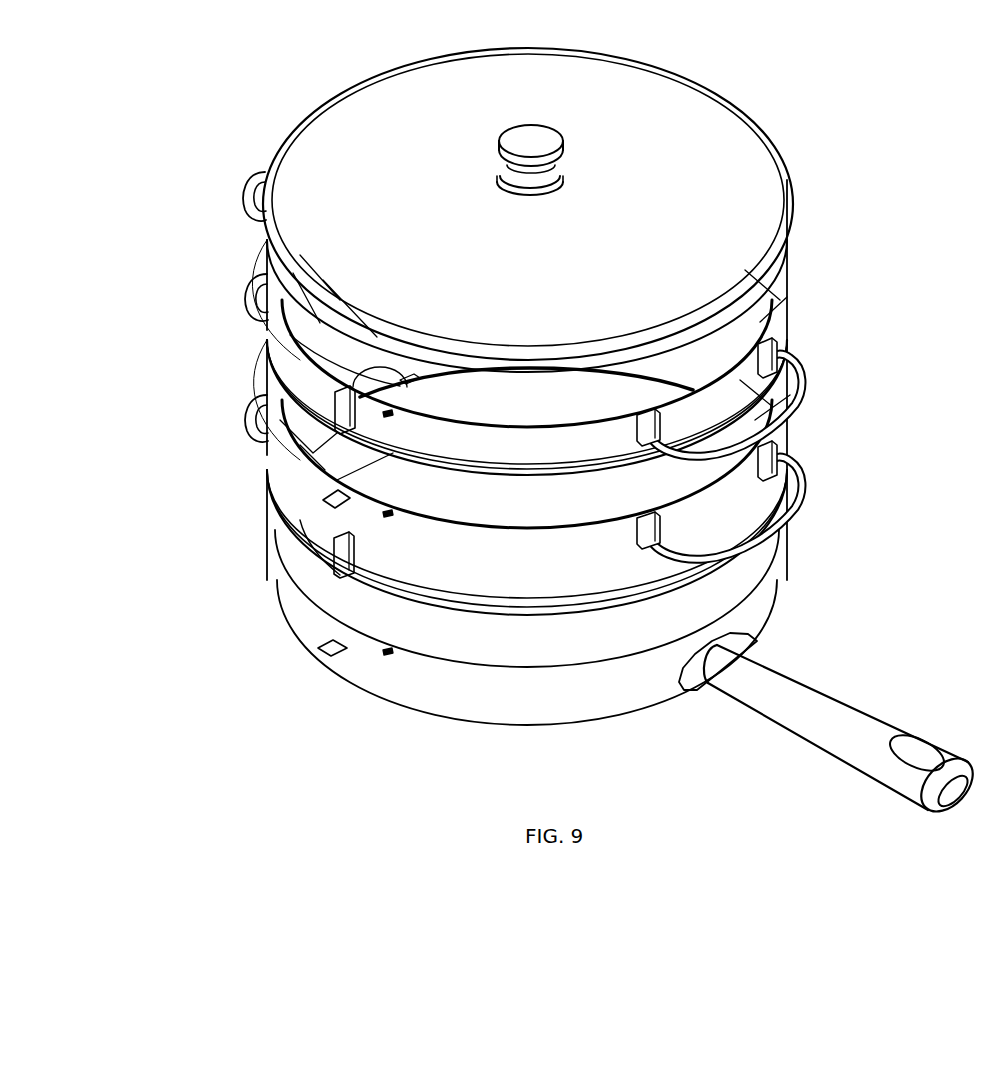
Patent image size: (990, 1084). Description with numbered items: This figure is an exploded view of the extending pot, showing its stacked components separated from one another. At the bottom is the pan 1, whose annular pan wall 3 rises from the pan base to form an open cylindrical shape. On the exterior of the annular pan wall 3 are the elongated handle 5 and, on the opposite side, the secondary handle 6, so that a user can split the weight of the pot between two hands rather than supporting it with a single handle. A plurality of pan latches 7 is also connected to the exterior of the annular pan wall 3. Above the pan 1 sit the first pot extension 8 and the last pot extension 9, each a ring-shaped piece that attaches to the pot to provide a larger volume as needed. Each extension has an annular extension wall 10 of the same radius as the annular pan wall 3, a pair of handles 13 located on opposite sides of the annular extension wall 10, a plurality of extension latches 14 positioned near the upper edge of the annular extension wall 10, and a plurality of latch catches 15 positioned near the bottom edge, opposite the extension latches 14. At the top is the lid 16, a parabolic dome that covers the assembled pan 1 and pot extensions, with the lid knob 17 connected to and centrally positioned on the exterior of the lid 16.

The pan 1 is at (812, 530).
The annular pan wall 3 is at (282, 553).
The elongated handle 5 is at (826, 688).
The secondary handle 6 is at (252, 442).
The plurality of pan latches 7 is at (330, 645).
The first pot extension 8 is at (815, 412).
The last pot extension 9 is at (802, 266).
The annular extension wall 10 is at (272, 252).
The pair of handles 13 is at (255, 302).
The plurality of extension latches 14 is at (330, 496).
The plurality of latch catches 15 is at (338, 568).
The lid 16 is at (804, 154).
The lid knob 17 is at (525, 140).